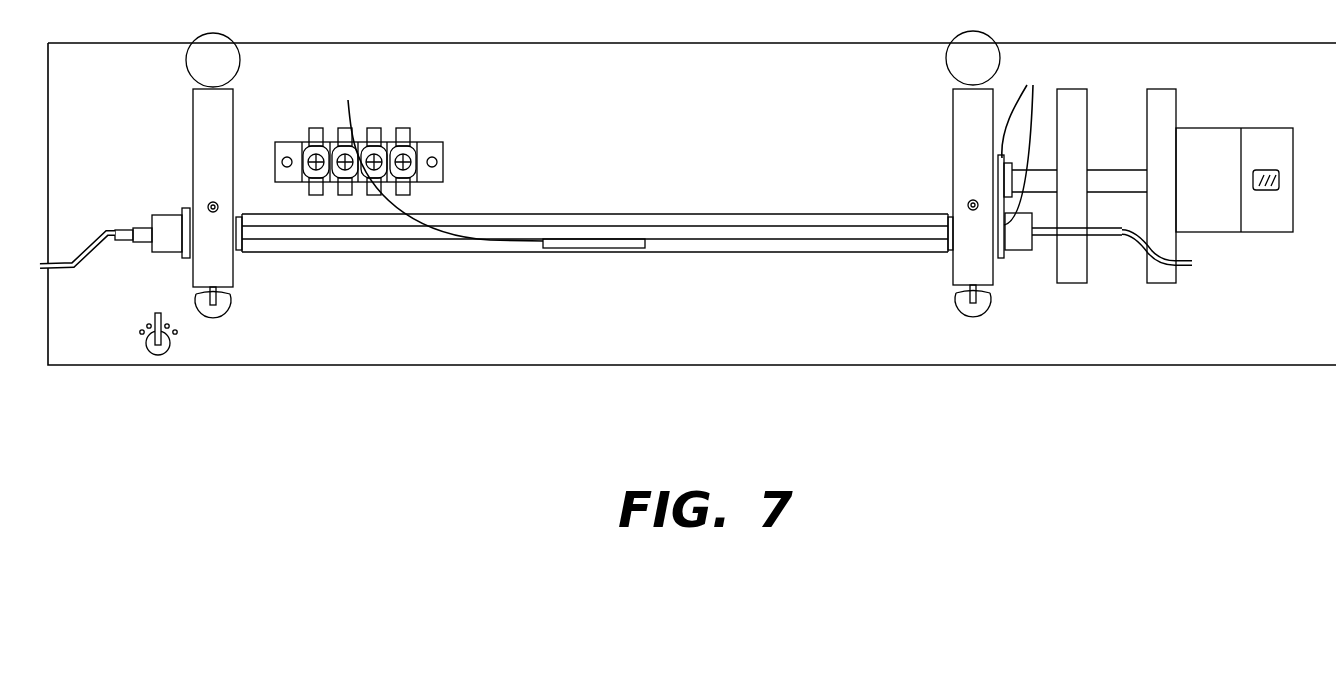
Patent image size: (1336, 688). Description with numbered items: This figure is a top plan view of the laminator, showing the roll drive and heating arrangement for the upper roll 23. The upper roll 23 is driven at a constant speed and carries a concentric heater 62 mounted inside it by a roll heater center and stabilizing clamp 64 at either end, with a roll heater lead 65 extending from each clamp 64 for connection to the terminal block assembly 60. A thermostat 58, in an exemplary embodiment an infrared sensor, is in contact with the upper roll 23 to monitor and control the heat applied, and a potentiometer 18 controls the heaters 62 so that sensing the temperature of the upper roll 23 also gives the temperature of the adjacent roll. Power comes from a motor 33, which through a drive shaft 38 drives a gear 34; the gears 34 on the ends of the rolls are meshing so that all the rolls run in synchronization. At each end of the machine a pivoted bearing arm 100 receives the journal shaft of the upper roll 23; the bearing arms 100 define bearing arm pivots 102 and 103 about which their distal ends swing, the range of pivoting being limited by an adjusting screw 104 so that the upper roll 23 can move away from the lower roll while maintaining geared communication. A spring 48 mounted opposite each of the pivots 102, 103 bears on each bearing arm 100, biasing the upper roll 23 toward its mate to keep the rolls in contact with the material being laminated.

The potentiometer 18 is at (158, 355).
The upper roll 23 is at (383, 253).
The motor 33 is at (1263, 135).
The gear 34 is at (1023, 160).
The drive shaft 38 is at (1107, 173).
The spring 48 is at (230, 303).
The thermostat 58 is at (585, 246).
The terminal block assembly 60 is at (438, 150).
The heater 62 is at (145, 230).
The roll heater center and stabilizing clamp 64 is at (1020, 248).
The roll heater lead 65 is at (66, 260).
The bearing arm 100 is at (200, 118).
The bearing arm pivot 102 is at (195, 66).
The bearing arm pivot 103 is at (955, 63).
The adjusting screw 104 is at (967, 203).